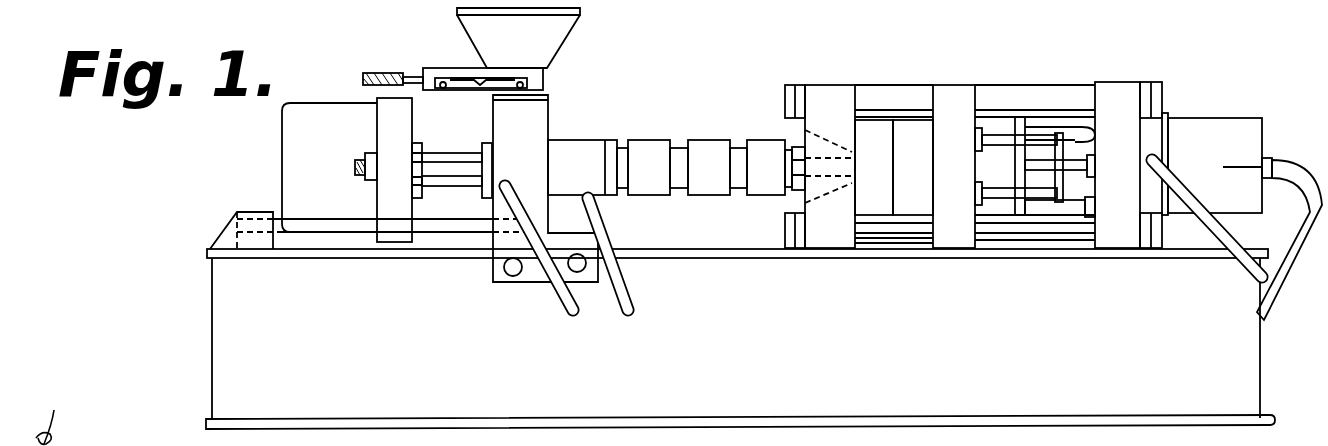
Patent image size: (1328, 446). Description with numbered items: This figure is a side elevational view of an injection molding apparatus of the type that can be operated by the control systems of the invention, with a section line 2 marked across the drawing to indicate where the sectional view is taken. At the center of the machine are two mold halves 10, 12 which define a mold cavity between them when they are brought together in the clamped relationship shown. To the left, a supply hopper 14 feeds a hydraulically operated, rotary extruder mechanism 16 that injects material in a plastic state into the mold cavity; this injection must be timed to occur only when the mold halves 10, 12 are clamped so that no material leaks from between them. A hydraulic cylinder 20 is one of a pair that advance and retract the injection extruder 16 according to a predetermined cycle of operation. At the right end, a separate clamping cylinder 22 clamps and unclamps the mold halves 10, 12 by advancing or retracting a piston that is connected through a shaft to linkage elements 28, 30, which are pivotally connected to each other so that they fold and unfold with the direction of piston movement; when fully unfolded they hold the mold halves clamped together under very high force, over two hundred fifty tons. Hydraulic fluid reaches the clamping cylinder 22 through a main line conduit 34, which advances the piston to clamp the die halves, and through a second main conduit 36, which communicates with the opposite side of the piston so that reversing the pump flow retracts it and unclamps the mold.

The section line 2- 2 is at (237, 192).
The mold half 10 is at (883, 171).
The mold half 12 is at (923, 169).
The supply hopper 14 is at (541, 48).
The extruder mechanism 16 is at (680, 142).
The hydraulic cylinder 20 is at (574, 165).
The clamping cylinder 22 is at (1240, 158).
The linkage element 28 is at (1003, 138).
The linkage element 30 is at (1071, 165).
The main line conduit 34 is at (1297, 166).
The second main conduit 36 is at (1220, 232).